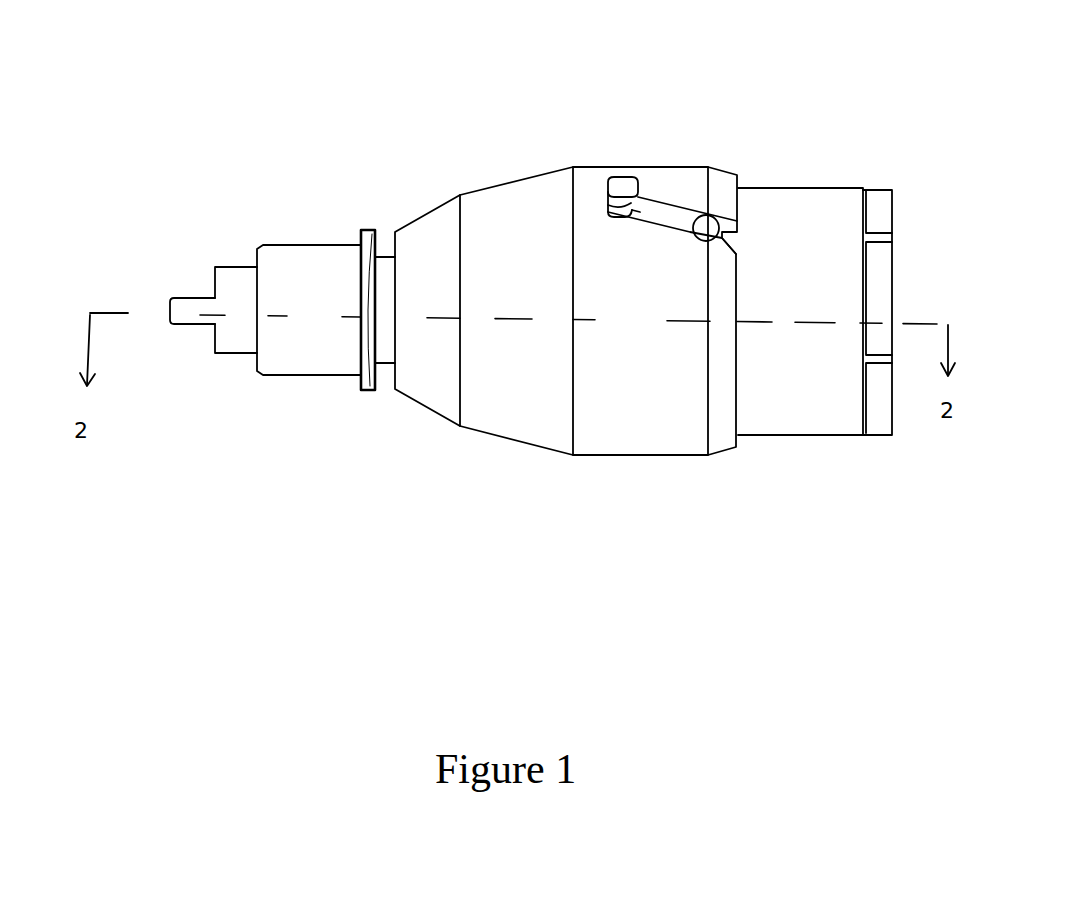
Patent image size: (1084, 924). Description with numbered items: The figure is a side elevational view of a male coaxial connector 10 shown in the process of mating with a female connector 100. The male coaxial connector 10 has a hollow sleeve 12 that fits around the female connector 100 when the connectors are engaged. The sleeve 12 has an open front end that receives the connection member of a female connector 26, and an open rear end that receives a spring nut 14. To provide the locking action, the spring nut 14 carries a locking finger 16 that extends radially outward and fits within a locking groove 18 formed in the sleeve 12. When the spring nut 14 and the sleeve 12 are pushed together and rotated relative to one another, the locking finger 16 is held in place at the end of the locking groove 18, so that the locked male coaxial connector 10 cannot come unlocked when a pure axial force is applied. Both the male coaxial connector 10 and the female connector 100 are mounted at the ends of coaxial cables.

The female connector 100 is at (250, 203).
The male coaxial connector 10 is at (552, 107).
The sleeve 12 is at (630, 425).
The spring nut 14 is at (827, 403).
The locking finger 16 is at (707, 227).
The locking groove 18 is at (653, 220).
The connection member of a female connector 26 is at (384, 350).